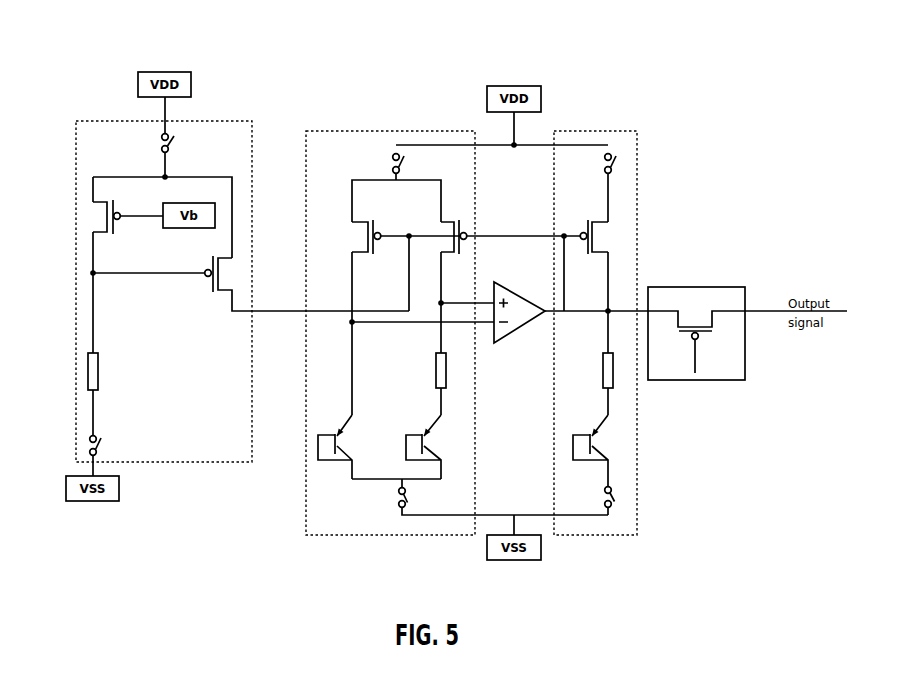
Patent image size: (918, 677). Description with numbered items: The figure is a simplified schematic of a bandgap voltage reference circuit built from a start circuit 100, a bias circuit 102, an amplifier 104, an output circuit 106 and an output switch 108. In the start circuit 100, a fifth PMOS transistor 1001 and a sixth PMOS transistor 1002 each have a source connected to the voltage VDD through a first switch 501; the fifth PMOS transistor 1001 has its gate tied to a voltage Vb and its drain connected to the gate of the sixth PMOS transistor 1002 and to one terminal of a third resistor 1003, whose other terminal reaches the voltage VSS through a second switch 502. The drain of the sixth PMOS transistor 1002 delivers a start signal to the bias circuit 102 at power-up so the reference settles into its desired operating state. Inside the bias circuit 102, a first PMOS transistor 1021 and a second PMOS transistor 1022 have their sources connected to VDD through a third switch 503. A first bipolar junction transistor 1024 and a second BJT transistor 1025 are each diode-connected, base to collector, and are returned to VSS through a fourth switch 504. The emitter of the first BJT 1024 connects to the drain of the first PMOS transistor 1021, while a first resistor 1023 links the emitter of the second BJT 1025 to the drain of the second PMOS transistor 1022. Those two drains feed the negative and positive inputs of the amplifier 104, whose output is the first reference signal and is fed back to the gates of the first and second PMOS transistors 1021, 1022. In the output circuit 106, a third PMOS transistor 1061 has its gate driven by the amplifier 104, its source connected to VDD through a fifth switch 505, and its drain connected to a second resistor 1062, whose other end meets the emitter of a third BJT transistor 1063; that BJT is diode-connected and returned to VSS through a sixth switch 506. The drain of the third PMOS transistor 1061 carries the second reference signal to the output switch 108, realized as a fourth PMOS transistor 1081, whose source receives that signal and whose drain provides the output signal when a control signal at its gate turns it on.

The start circuit 100 is at (103, 147).
The fifth PMOS transistor 1001 is at (93, 193).
The sixth PMOS transistor 1002 is at (213, 260).
The third resistor 1003 is at (92, 351).
The first switch 501 is at (170, 142).
The second switch 502 is at (98, 441).
The bias circuit 102 is at (343, 137).
The third switch 503 is at (399, 155).
The fourth switch 504 is at (399, 492).
The first PMOS transistor 1021 is at (352, 206).
The second PMOS transistor 1022 is at (441, 207).
The first resistor 1023 is at (437, 369).
The first bipolar junction transistor 1024 is at (337, 430).
The second BJT transistor 1025 is at (437, 418).
The amplifier 104 is at (496, 283).
The output circuit 106 is at (617, 136).
The fifth switch 505 is at (617, 166).
The sixth switch 506 is at (606, 483).
The third PMOS transistor 1061 is at (608, 206).
The second resistor 1062 is at (603, 369).
The third BJT transistor 1063 is at (592, 425).
The output switch 108 is at (668, 288).
The fourth PMOS transistor 1081 is at (688, 312).